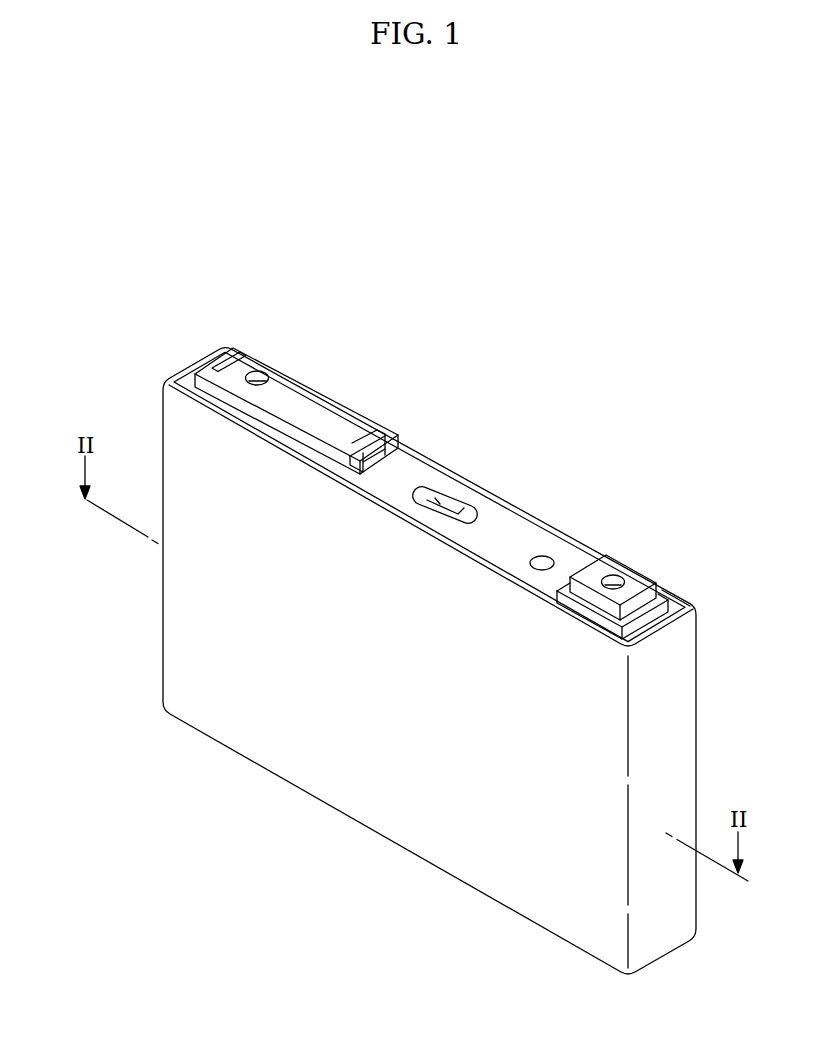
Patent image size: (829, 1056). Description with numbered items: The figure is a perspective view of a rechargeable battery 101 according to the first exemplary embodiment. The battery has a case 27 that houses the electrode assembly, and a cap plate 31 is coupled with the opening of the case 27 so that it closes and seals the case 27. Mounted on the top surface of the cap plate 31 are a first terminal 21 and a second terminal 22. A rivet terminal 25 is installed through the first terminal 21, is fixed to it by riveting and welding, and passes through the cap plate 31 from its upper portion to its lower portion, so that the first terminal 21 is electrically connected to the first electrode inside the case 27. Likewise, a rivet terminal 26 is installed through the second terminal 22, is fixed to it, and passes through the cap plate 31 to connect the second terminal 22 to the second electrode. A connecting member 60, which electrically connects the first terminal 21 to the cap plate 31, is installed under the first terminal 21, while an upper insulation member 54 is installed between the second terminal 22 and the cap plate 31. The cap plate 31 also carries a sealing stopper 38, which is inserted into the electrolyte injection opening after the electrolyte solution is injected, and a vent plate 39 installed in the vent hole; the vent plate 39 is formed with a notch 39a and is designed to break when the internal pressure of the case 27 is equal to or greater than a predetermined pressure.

The rechargeable battery 101 is at (566, 371).
The case 27 is at (387, 800).
The cap plate 31 is at (407, 463).
The first terminal 21 is at (638, 585).
The second terminal 22 is at (297, 392).
The rivet terminal 25 is at (613, 578).
The rivet terminal 26 is at (257, 372).
The sealing stopper 38 is at (545, 557).
The vent plate 39 is at (443, 489).
The notch 39a is at (455, 511).
The upper insulation member 54 is at (358, 412).
The connecting member 60 is at (662, 590).